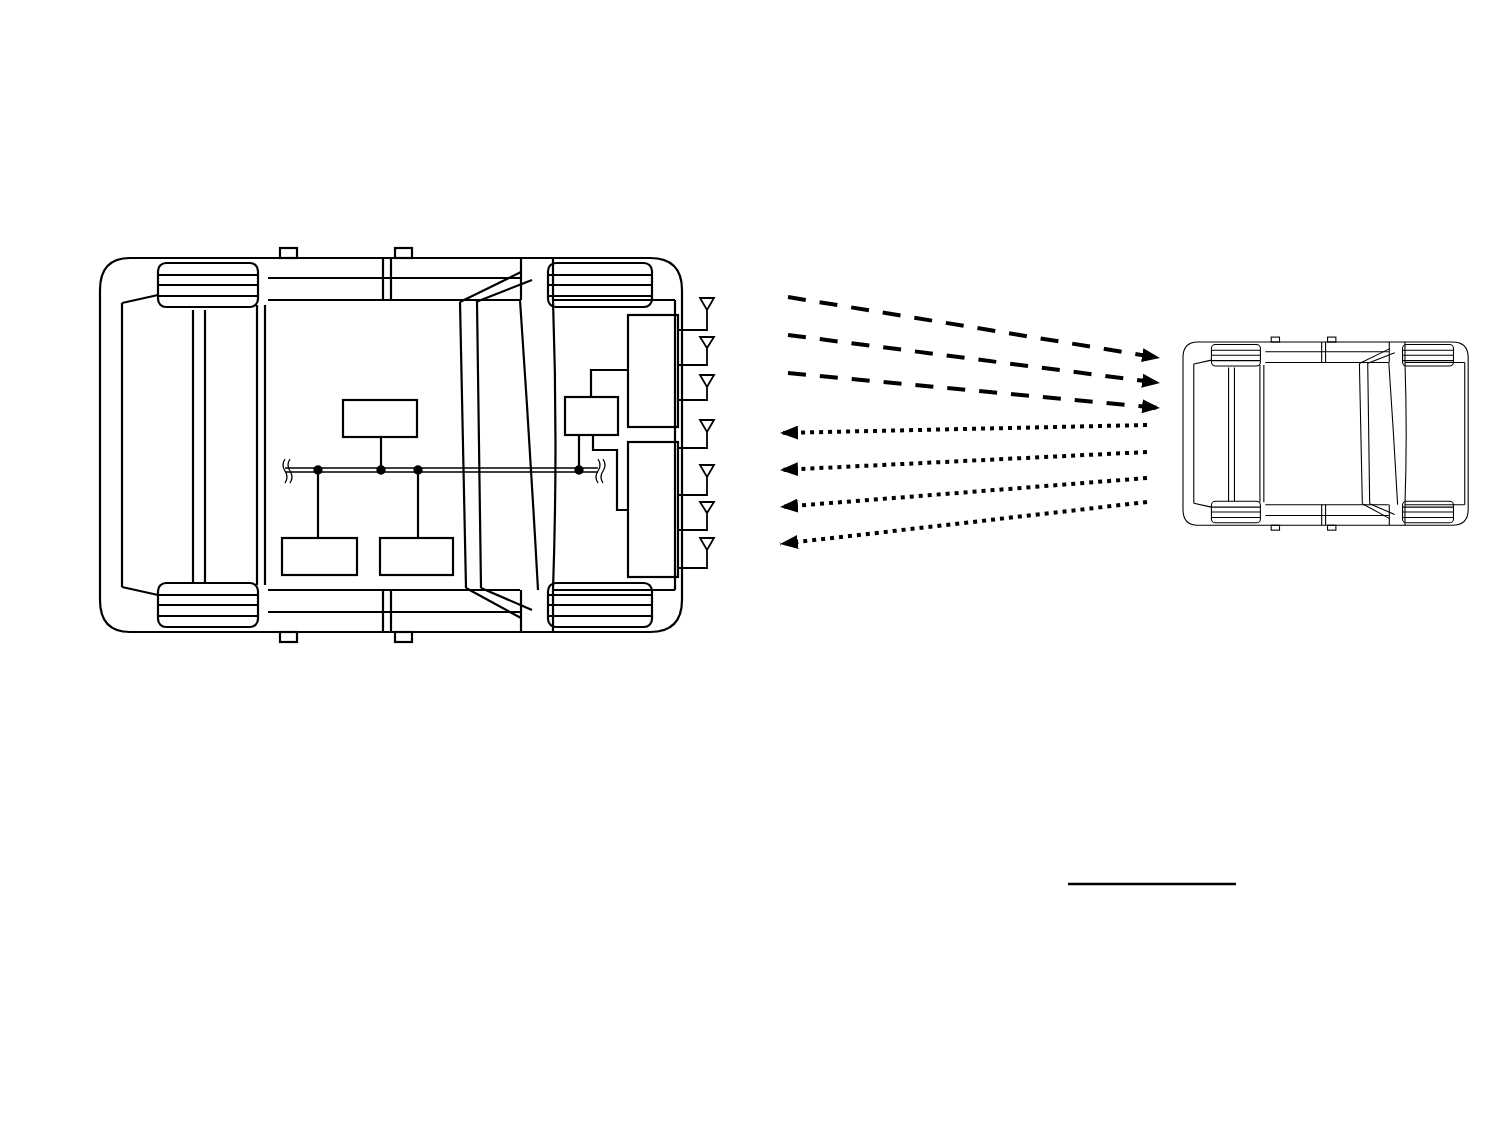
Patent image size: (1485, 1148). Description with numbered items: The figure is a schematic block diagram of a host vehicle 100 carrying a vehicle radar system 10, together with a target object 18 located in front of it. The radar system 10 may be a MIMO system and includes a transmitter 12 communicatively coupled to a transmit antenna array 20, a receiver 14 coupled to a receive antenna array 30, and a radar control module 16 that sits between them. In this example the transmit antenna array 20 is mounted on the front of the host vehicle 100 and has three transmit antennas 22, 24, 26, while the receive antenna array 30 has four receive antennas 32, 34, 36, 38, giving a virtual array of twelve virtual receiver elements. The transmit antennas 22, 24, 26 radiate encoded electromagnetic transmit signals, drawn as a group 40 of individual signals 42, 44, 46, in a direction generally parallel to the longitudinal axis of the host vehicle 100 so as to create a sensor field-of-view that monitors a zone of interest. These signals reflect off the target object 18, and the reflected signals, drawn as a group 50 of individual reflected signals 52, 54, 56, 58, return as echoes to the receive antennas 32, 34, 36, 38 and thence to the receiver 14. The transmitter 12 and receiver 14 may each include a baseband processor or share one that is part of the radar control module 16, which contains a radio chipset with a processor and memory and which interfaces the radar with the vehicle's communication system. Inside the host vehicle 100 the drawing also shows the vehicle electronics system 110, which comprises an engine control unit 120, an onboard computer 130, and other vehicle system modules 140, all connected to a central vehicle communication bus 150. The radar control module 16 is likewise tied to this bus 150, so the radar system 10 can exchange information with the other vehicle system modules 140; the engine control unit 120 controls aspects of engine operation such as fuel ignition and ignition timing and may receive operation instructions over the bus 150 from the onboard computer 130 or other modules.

The host vehicle 100 is at (452, 165).
The vehicle electronics system 110 is at (345, 363).
The engine control unit 120 is at (372, 399).
The onboard computer 130 is at (380, 555).
The vehicle system modules 140 is at (282, 555).
The central vehicle communication bus 150 is at (483, 464).
The vehicle radar system 10 is at (698, 225).
The transmitter 12 is at (653, 371).
The receiver 14 is at (653, 509).
The radar control module 16 is at (596, 440).
The target object 18 is at (1342, 338).
The transmit antenna array 20 is at (722, 276).
The transmit antenna 22 is at (714, 303).
The transmit antenna 24 is at (714, 342).
The transmit antenna 26 is at (714, 380).
The receive antenna array 30 is at (722, 560).
The receive antenna 32 is at (714, 425).
The receive antenna 34 is at (714, 470).
The receive antenna 36 is at (714, 507).
The receive antenna 38 is at (714, 543).
The transmitted signals 40 is at (884, 276).
The transmit signal 42 is at (958, 324).
The transmit signal 44 is at (848, 344).
The transmit signal 46 is at (815, 378).
The reflected signals 50 is at (947, 540).
The reflected signal 52 is at (818, 435).
The reflected signal 54 is at (817, 470).
The reflected signal 56 is at (817, 507).
The reflected signal 58 is at (817, 544).